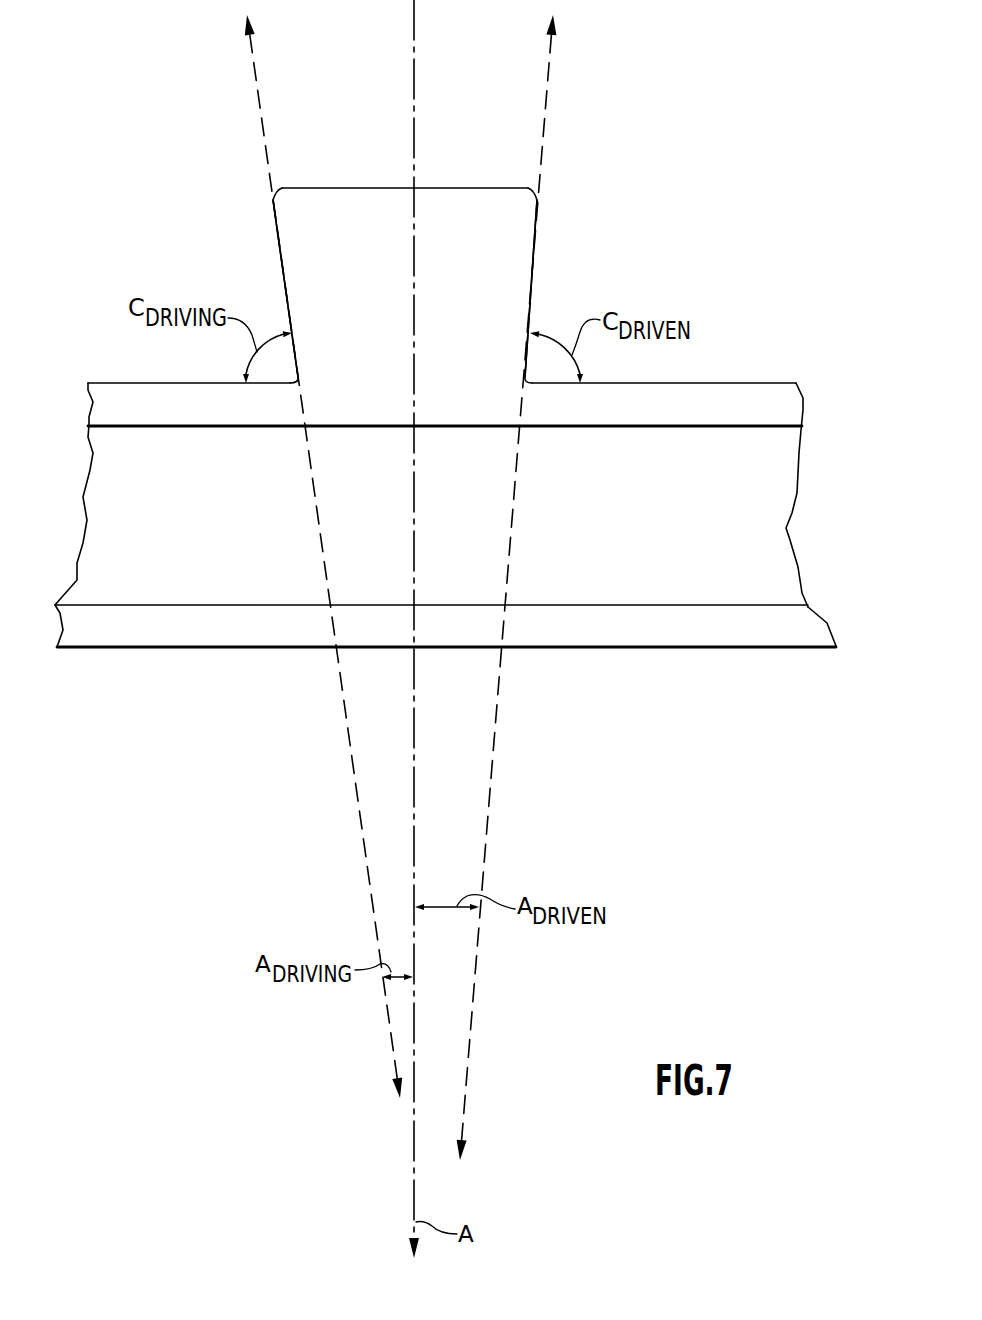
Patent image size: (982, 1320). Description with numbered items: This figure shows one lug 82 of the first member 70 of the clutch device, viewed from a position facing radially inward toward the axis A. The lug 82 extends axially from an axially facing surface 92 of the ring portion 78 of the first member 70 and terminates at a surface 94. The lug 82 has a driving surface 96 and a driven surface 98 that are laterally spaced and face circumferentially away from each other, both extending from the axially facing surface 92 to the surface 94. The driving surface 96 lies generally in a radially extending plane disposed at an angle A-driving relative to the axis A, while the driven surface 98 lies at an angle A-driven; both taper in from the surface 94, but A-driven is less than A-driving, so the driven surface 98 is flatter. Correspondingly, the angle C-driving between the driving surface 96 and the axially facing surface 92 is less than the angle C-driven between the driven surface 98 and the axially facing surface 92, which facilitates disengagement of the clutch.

The first member 70 is at (632, 583).
The ring portion 78 is at (758, 528).
The lug 82 is at (410, 248).
The axially facing surface 92 is at (695, 383).
The surface 94 is at (340, 188).
The driving surface 96 is at (278, 242).
The driven surface 98 is at (535, 242).